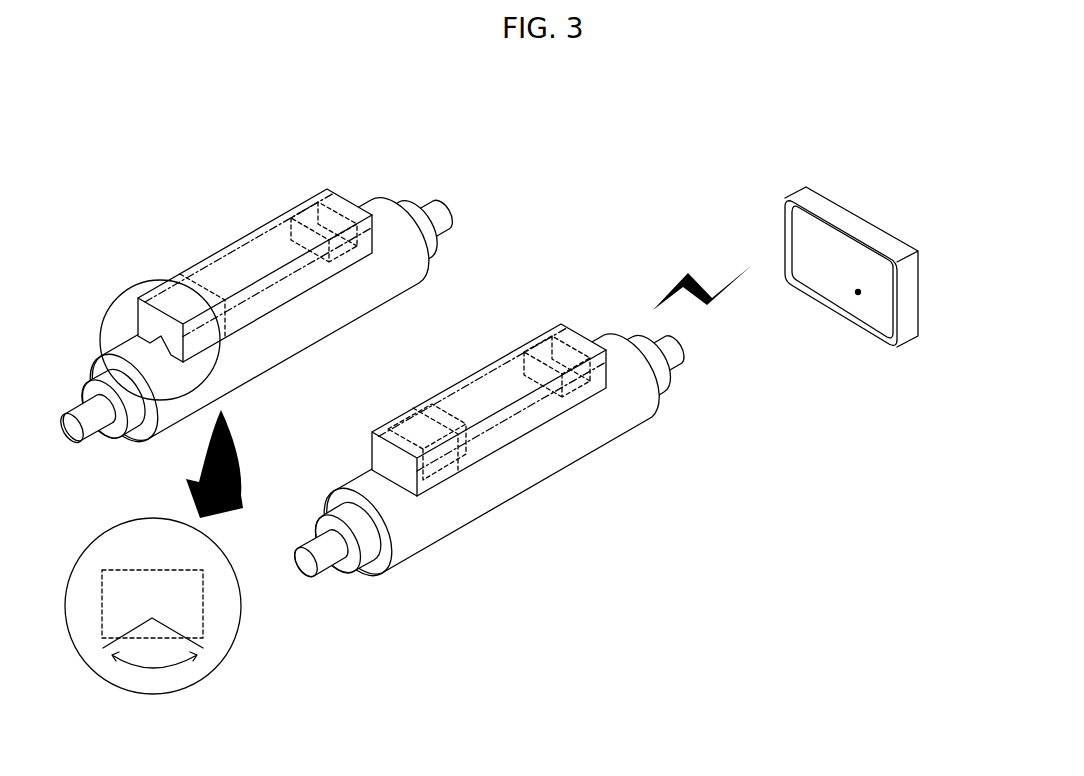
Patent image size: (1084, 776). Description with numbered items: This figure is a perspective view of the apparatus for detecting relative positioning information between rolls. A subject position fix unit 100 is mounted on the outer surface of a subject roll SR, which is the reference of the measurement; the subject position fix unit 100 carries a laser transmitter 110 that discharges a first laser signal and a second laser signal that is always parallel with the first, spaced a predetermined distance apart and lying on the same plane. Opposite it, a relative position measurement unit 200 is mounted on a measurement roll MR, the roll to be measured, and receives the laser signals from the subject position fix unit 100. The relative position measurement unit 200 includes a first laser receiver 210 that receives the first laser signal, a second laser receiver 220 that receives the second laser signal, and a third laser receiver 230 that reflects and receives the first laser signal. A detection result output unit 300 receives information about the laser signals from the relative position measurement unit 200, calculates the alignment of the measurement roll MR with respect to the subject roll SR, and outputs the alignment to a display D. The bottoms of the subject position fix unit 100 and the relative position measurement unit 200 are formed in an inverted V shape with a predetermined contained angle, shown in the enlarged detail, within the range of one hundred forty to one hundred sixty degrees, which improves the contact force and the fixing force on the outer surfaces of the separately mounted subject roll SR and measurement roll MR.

The subject position fix unit 100 is at (254, 300).
The laser transmitter 110 is at (313, 217).
The subject roll SR is at (137, 352).
The relative position measurement unit 200 is at (499, 455).
The first laser receiver 210 is at (448, 444).
The second laser receiver 220 is at (647, 408).
The third laser receiver 230 is at (500, 430).
The measurement roll MR is at (365, 487).
The detection result output unit 300 is at (869, 231).
The display D is at (858, 292).